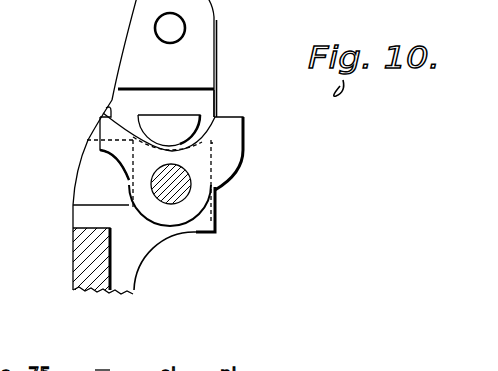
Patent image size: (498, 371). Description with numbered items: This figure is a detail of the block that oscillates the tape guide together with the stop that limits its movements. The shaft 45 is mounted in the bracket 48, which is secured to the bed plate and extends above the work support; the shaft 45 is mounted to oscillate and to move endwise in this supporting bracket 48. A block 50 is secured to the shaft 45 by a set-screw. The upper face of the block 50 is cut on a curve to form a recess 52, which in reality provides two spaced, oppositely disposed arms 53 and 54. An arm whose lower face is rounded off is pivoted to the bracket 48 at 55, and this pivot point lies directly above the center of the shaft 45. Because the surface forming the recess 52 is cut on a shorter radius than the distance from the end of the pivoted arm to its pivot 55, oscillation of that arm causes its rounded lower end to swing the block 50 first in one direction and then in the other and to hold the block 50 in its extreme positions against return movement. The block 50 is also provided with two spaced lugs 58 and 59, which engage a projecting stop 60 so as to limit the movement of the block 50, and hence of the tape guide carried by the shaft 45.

The shaft 45 is at (175, 182).
The bracket 48 is at (148, 62).
The block 50 is at (178, 213).
The recess 52 is at (219, 100).
The arm 53 is at (111, 107).
The arm 54 is at (223, 116).
The pivot 55 is at (186, 28).
The lug 58 is at (99, 140).
The lug 59 is at (213, 143).
The stop 60 is at (170, 128).